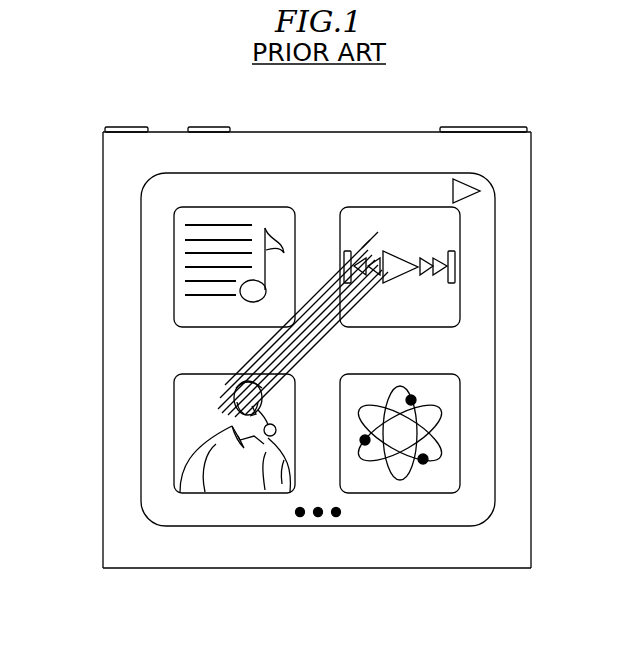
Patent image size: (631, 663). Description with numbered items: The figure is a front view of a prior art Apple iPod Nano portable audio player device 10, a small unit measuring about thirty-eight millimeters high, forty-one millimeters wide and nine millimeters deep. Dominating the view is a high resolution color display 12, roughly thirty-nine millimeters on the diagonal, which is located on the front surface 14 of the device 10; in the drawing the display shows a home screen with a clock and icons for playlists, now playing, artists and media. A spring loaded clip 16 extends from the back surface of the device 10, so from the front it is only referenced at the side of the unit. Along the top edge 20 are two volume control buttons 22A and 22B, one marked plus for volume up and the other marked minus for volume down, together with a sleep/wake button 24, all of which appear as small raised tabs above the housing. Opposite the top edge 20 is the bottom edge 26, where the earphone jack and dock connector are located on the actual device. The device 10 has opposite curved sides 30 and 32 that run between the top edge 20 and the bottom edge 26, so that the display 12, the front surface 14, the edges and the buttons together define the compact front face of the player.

The portable audio player device 10 is at (541, 599).
The color display 12 is at (463, 514).
The front surface 14 is at (518, 168).
The spring loaded clip 16 is at (621, 509).
The top edge 20 is at (313, 132).
The volume control button 22A is at (208, 127).
The volume control button 22B is at (128, 127).
The sleep/wake button 24 is at (485, 127).
The bottom edge 26 is at (147, 568).
The curved side 30 is at (533, 309).
The curved side 32 is at (103, 509).